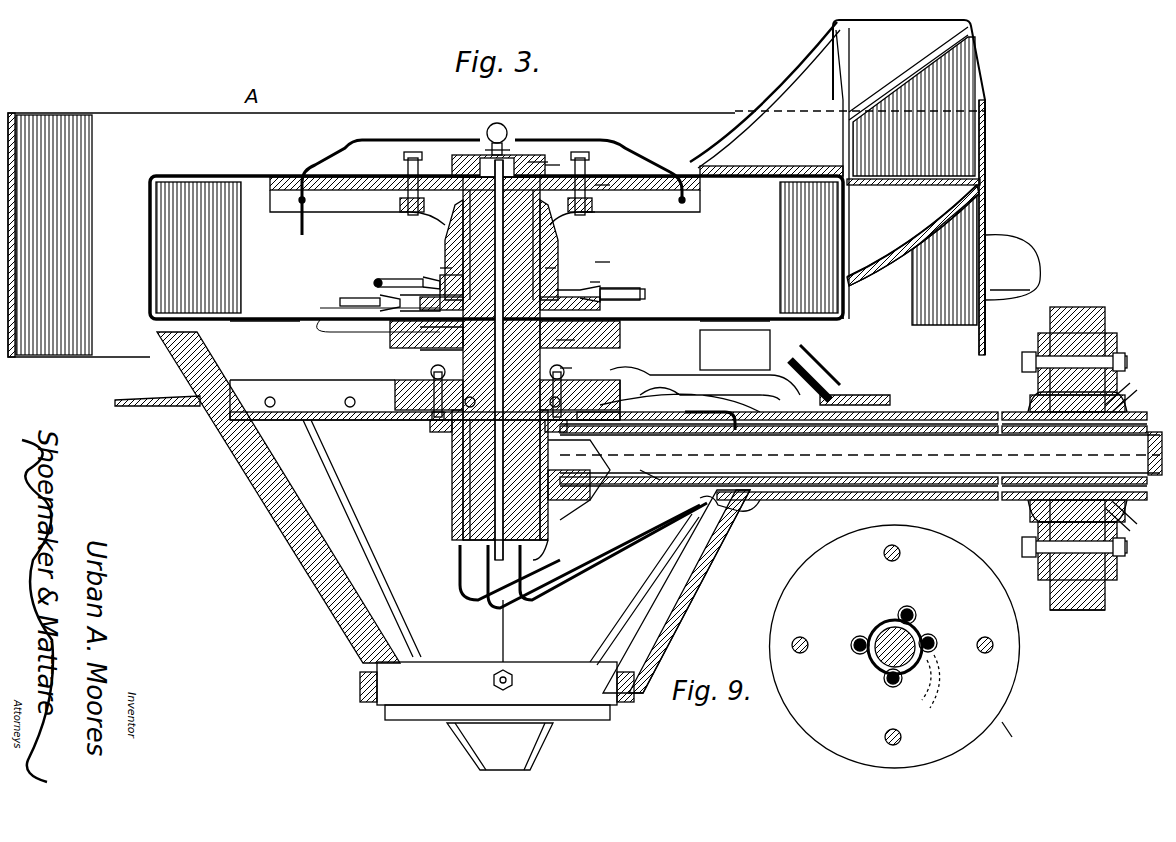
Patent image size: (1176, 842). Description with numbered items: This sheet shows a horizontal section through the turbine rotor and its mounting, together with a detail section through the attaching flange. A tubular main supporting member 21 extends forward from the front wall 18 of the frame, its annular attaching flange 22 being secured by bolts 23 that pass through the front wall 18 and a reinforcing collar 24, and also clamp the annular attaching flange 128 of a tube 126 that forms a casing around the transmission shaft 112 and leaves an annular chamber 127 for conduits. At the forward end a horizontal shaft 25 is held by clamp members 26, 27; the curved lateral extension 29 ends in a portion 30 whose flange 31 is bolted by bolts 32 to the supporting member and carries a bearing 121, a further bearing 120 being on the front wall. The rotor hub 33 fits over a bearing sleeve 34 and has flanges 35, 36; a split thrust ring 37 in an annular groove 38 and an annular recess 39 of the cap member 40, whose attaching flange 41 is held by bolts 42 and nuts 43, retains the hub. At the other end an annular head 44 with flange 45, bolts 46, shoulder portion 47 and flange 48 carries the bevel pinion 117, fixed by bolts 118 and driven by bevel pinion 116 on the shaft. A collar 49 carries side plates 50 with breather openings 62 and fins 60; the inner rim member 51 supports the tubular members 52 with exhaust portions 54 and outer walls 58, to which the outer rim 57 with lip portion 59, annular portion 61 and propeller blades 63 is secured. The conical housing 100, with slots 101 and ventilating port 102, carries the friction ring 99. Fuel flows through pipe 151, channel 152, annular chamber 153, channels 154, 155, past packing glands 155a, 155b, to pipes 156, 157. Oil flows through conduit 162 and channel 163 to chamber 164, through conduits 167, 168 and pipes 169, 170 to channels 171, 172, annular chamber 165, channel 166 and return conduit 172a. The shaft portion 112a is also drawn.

In FIG. 3, the front wall 18 is at (1077, 622).
In FIG. 3, the main supporting member 21 is at (962, 412).
In FIG. 3, the annular attaching flange 22 is at (1038, 400).
In FIG. 3, the bolts 23 is at (1120, 358).
In FIG. 9, the bolts 23 is at (886, 562).
In FIG. 3, the reinforcing collar 24 is at (1110, 335).
In FIG. 3, the horizontal shaft 25 is at (540, 233).
In FIG. 3, the clamp member 26 is at (462, 478).
In FIG. 3, the clamp member 27 is at (540, 522).
In FIG. 3, the curved lateral extension 29 is at (560, 510).
In FIG. 3, the portion 30 is at (710, 398).
In FIG. 3, the flange 31 is at (835, 345).
In FIG. 3, the bolts 32 is at (775, 362).
In FIG. 3, the hub 33 is at (452, 235).
In FIG. 3, the bearing sleeve 34 is at (455, 254).
In FIG. 3, the flange 35 is at (615, 284).
In FIG. 3, the flange 36 is at (590, 210).
In FIG. 3, the split thrust ring 37 is at (540, 163).
In FIG. 3, the annular groove 38 is at (490, 125).
In FIG. 3, the annular recess 39 is at (552, 170).
In FIG. 3, the cap member 40 is at (458, 160).
In FIG. 3, the annular attaching flange 41 is at (395, 190).
In FIG. 3, the bolts 42 is at (400, 210).
In FIG. 3, the nuts 43 is at (404, 164).
In FIG. 3, the annular head 44 is at (565, 342).
In FIG. 3, the flange 45 is at (392, 338).
In FIG. 3, the bolts 46 is at (420, 342).
In FIG. 3, the shoulder portion 47 is at (440, 283).
In FIG. 3, the flange 48 is at (418, 378).
In FIG. 3, the collar 49 is at (610, 190).
In FIG. 3, the side plates 50 is at (760, 178).
In FIG. 3, the inner rim member 51 is at (843, 300).
In FIG. 3, the tubular members 52 is at (712, 148).
In FIG. 3, the exhaust portions 54 is at (848, 42).
In FIG. 3, the outer rim 57 is at (985, 205).
In FIG. 3, the outer walls 58 is at (985, 150).
In FIG. 3, the lip portion 59 is at (36, 357).
In FIG. 3, the fins 60 is at (290, 320).
In FIG. 3, the annular portion 61 is at (986, 122).
In FIG. 3, the breather openings 62 is at (300, 178).
In FIG. 3, the propeller blades 63 is at (1035, 290).
In FIG. 3, the friction ring 99 is at (140, 408).
In FIG. 3, the conical housing 100 is at (370, 673).
In FIG. 3, the slots 101 is at (215, 430).
In FIG. 3, the ventilating port 102 is at (480, 768).
In FIG. 3, the shaft 112 is at (830, 500).
In FIG. 3, the shaft portion 112a is at (660, 470).
In FIG. 3, the bevel pinion 116 is at (625, 566).
In FIG. 3, the bevel pinion 117 is at (395, 392).
In FIG. 3, the bolts 118 is at (435, 422).
In FIG. 3, the bearing 120 is at (1130, 380).
In FIG. 3, the bearing 121 is at (700, 498).
In FIG. 3, the tube 126 is at (925, 500).
In FIG. 9, the tube 126 is at (885, 618).
In FIG. 3, the annular chamber 127 is at (884, 500).
In FIG. 3, the annular attaching flange 128 is at (1075, 307).
In FIG. 9, the annular attaching flange 128 is at (990, 722).
In FIG. 3, the pipe 151 is at (485, 583).
In FIG. 9, the pipe 151 is at (890, 685).
In FIG. 3, the interior longitudinal channel 152 is at (465, 515).
In FIG. 3, the annular chamber 153 is at (445, 372).
In FIG. 3, the interior channel 154 is at (420, 355).
In FIG. 3, the interior channel 155 is at (575, 340).
In FIG. 3, the packing gland 155a is at (570, 368).
In FIG. 3, the packing gland 155b is at (545, 264).
In FIG. 3, the pipe 156 is at (655, 292).
In FIG. 3, the pipe 157 is at (345, 298).
In FIG. 3, the conduit 162 is at (520, 612).
In FIG. 9, the conduit 162 is at (855, 650).
In FIG. 3, the interior channel 163 is at (470, 463).
In FIG. 3, the chamber 164 is at (515, 140).
In FIG. 3, the annular chamber 165 is at (545, 250).
In FIG. 3, the interior channel 166 is at (470, 497).
In FIG. 3, the conduit 167 is at (360, 150).
In FIG. 3, the conduit 168 is at (635, 150).
In FIG. 3, the pipe 169 is at (378, 280).
In FIG. 3, the pipe 170 is at (598, 282).
In FIG. 3, the channel 171 is at (600, 262).
In FIG. 3, the channel 172 is at (445, 278).
In FIG. 3, the return conduit 172a is at (685, 412).
In FIG. 9, the return conduit 172a is at (930, 640).